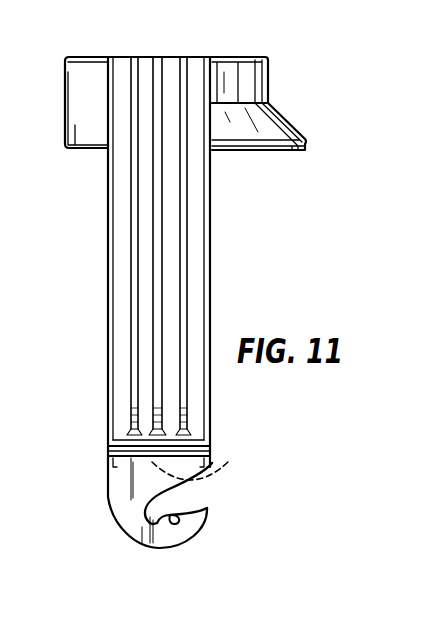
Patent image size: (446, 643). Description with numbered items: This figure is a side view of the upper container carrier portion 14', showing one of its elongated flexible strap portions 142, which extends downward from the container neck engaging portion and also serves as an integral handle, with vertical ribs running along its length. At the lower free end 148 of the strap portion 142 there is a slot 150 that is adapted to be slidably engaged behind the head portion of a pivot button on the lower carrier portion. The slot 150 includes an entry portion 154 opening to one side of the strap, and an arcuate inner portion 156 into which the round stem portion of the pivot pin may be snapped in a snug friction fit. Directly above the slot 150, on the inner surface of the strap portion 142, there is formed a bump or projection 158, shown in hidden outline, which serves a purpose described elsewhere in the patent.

The upper container carrier portion 14' is at (197, 300).
The strap portion 142 is at (213, 290).
The lower free end 148 is at (118, 530).
The slot 150 is at (210, 493).
The entry portion 154 is at (208, 510).
The arcuate inner portion 156 is at (175, 523).
The bump or projection 158 is at (230, 464).